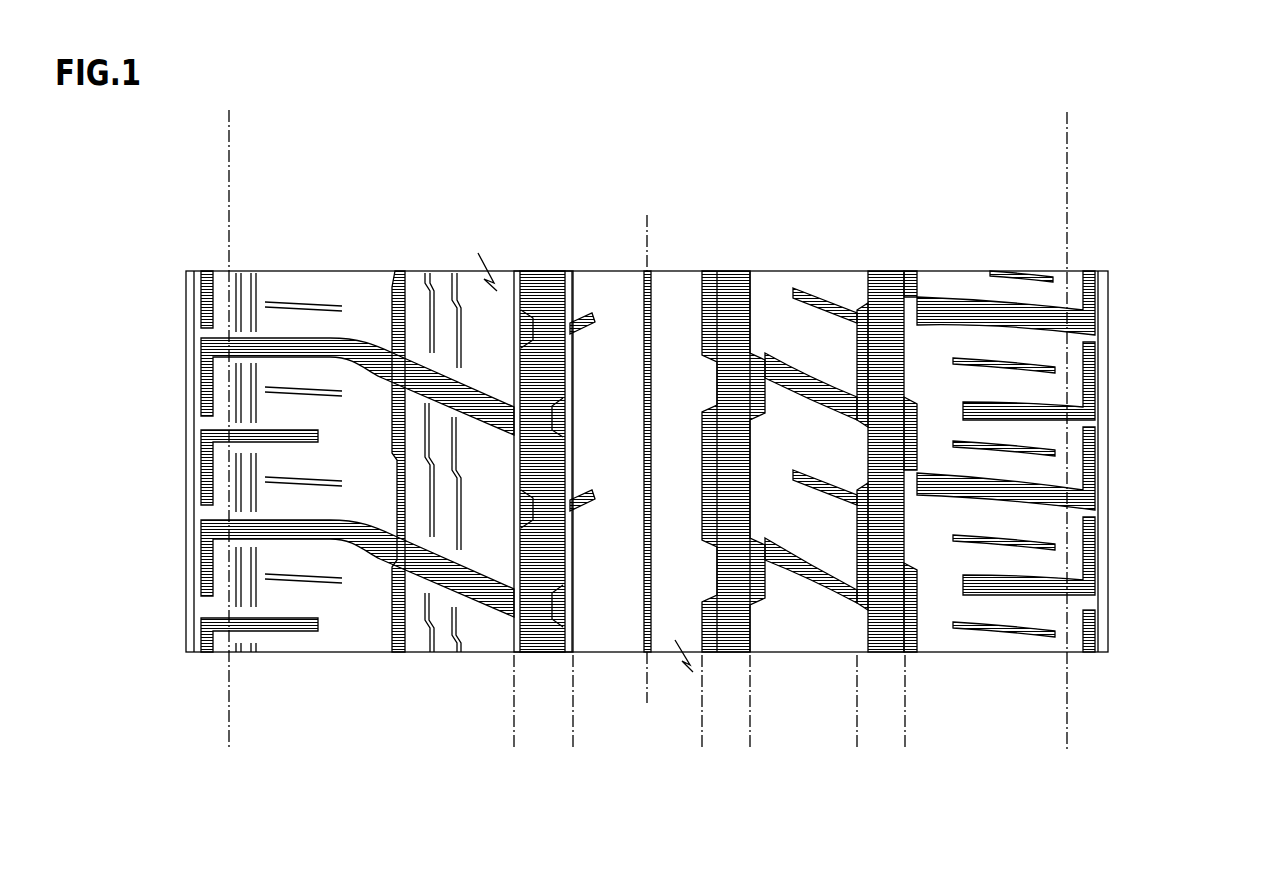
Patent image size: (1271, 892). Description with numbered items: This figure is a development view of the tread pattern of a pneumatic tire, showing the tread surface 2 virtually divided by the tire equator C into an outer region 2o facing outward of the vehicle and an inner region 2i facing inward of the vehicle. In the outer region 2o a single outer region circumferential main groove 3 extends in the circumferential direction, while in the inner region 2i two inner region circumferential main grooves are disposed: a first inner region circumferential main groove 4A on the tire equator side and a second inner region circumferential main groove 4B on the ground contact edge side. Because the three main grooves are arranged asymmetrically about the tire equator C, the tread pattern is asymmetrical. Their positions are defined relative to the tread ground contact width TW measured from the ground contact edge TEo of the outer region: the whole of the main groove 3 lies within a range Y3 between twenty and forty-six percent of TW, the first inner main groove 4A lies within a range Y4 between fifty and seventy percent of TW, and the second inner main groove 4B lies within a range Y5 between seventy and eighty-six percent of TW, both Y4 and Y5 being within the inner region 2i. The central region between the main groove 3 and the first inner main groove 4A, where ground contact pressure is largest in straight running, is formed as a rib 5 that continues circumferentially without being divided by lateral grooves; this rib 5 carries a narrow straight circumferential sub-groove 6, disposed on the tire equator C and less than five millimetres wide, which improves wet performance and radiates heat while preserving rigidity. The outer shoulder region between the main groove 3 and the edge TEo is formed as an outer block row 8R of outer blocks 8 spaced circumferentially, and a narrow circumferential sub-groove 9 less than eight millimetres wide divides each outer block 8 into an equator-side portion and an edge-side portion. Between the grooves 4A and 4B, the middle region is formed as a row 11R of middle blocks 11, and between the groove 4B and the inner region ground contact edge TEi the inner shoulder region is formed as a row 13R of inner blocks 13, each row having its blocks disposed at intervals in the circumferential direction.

The tread surface 2 is at (1118, 234).
The outer region circumferential main groove 3 is at (538, 650).
The first inner region circumferential main groove 4A is at (731, 650).
The second inner region circumferential main groove 4B is at (887, 650).
The rib 5 is at (702, 763).
The circumferential sub-groove 6 is at (636, 646).
The outer block 8 is at (348, 646).
The outer block row 8R is at (229, 763).
The circumferential sub-groove 9 is at (414, 646).
The middle block 11 is at (800, 646).
The row of middle blocks 11R is at (857, 763).
The inner block 13 is at (988, 646).
The row of inner blocks 13R is at (1068, 763).
The tire equator C is at (649, 668).
The tread ground contact width TW is at (229, 119).
The ground contact edge TEo is at (228, 170).
The inner region ground contact edge TEi is at (1068, 172).
The outer region 2o is at (235, 187).
The inner region 2i is at (1063, 188).
The range of region for forming the outer region circumferential main groove Y3 is at (613, 242).
The range of region for forming the first inner region circumferential main groove Y4 is at (813, 242).
The range of region for forming the second inner region circumferential main groove Y5 is at (818, 242).